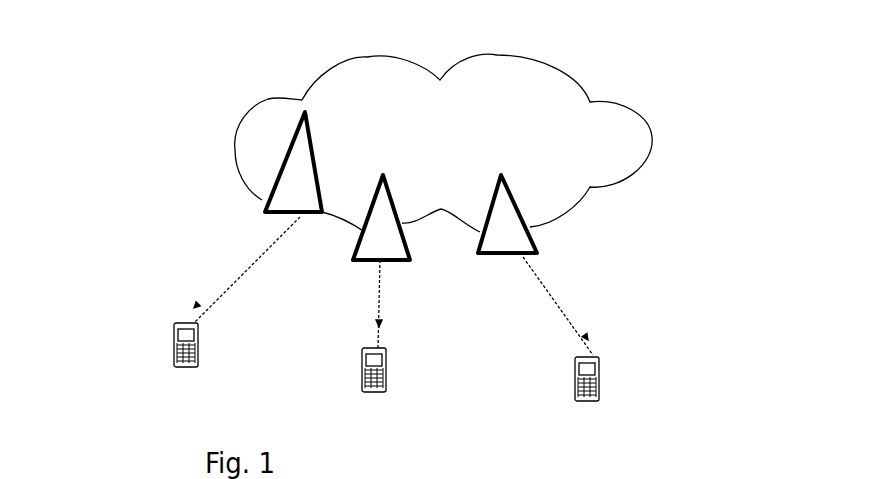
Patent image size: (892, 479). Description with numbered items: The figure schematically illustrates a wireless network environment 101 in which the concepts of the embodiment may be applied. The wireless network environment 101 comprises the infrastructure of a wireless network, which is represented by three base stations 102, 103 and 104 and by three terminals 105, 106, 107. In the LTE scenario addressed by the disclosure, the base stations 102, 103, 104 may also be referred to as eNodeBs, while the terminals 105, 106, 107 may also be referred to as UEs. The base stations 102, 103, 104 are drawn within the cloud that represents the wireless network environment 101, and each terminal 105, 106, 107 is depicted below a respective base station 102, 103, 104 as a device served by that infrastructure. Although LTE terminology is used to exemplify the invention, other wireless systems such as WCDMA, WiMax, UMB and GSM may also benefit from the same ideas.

The wireless network environment 101 is at (663, 237).
The base station 102 is at (262, 202).
The base station 103 is at (350, 258).
The base station 104 is at (485, 257).
The terminal 105 is at (174, 331).
The terminal 106 is at (362, 351).
The terminal 107 is at (599, 375).